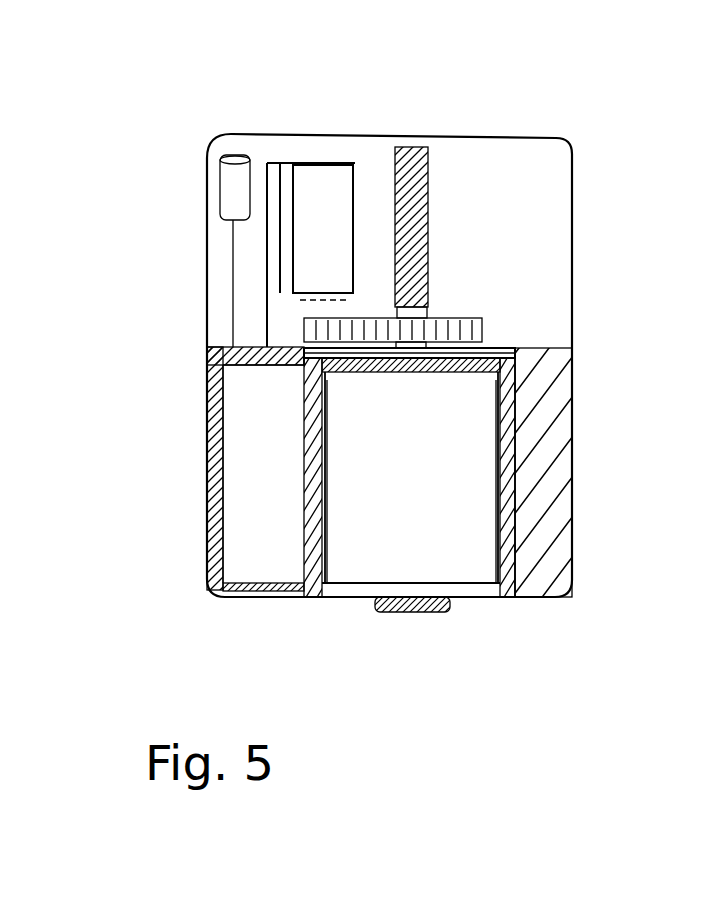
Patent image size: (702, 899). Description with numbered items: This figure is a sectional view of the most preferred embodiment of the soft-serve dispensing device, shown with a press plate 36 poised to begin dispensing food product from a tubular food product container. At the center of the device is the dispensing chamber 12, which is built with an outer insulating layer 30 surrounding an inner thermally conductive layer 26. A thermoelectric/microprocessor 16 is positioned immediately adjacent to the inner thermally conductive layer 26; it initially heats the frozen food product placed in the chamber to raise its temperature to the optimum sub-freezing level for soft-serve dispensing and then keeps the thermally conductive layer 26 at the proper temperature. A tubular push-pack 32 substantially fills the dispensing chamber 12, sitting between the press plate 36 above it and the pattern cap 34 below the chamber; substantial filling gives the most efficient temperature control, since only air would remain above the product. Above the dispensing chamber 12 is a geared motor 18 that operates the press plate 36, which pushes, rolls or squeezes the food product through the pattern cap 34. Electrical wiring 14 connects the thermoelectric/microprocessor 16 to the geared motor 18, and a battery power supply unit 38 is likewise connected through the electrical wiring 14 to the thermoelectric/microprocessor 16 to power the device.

The dispensing chamber 12 is at (180, 118).
The electrical wiring 14 is at (223, 272).
The thermoelectric/microprocessor 16 is at (235, 512).
The geared motor 18 is at (336, 183).
The inner thermally conductive layer 26 is at (304, 440).
The outer insulating layer 30 is at (212, 386).
The tubular push-pack 32 is at (348, 555).
The pattern cap 34 is at (443, 607).
The press plate 36 is at (517, 355).
The battery power supply unit 38 is at (220, 187).